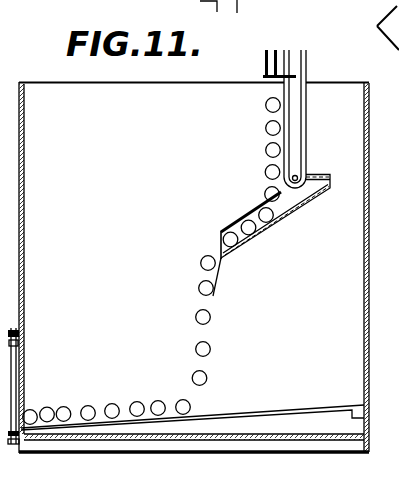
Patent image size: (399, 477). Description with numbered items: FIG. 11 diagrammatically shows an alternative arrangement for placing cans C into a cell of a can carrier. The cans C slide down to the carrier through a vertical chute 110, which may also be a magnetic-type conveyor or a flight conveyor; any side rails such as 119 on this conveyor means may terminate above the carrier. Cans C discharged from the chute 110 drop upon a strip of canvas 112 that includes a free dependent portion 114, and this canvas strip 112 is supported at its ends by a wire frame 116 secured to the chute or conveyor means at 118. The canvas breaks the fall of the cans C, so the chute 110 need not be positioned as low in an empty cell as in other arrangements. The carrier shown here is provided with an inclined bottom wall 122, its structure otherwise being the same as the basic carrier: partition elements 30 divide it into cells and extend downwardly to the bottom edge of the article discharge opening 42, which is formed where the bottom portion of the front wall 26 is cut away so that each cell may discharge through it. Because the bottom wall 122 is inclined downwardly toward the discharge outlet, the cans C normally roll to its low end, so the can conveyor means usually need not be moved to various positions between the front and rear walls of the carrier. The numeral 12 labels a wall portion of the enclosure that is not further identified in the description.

The partition elements 30 is at (180, 92).
The side wall 12 is at (369, 192).
The front wall 26 is at (211, 363).
The side rails 119 is at (266, 64).
The securing point 118 is at (298, 176).
The cans C is at (266, 128).
The vertical chute 110 is at (221, 230).
The strip of canvas 112 is at (277, 218).
The wire frame 116 is at (220, 238).
The free dependent portion 114 is at (221, 260).
The article discharge opening 42 is at (21, 386).
The inclined bottom wall 122 is at (227, 413).